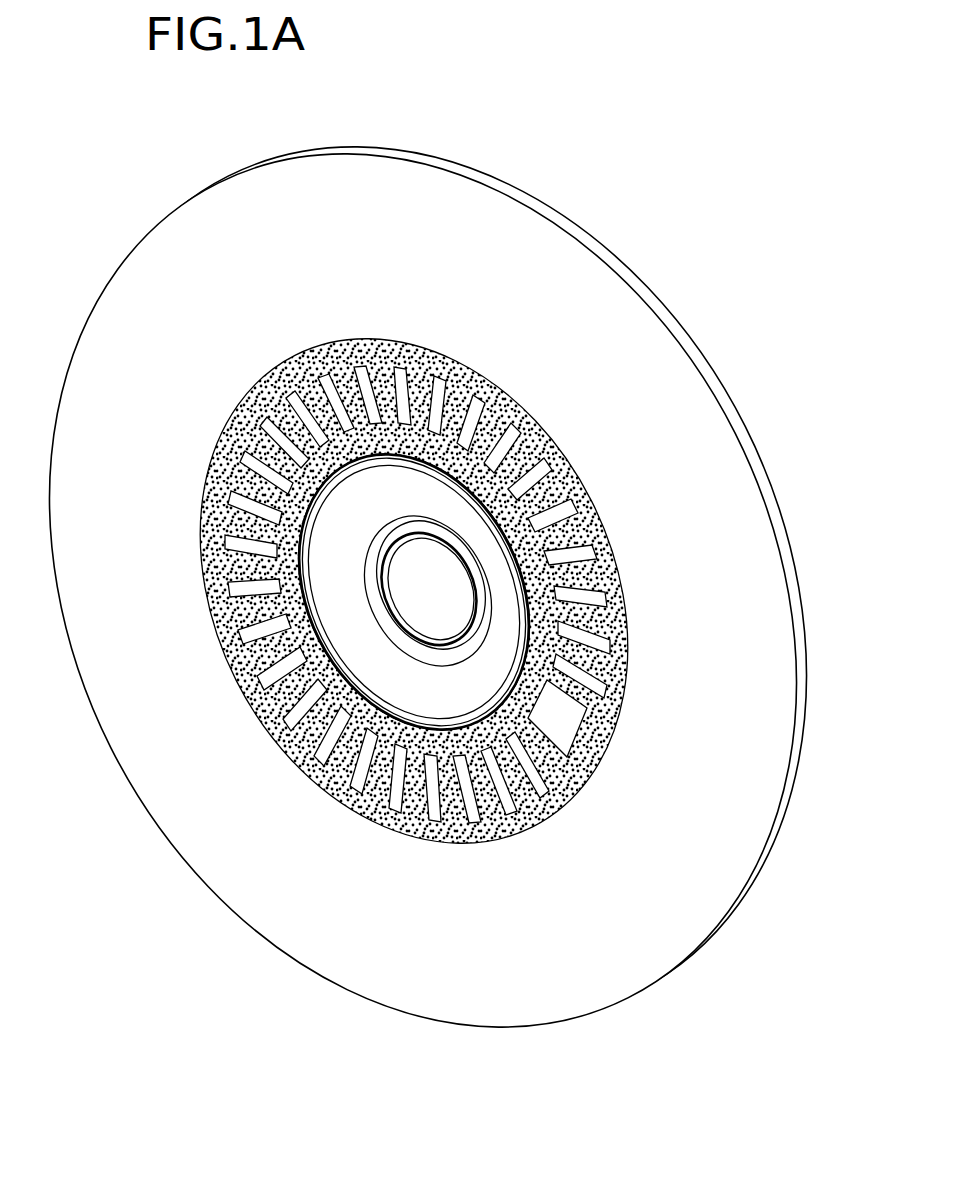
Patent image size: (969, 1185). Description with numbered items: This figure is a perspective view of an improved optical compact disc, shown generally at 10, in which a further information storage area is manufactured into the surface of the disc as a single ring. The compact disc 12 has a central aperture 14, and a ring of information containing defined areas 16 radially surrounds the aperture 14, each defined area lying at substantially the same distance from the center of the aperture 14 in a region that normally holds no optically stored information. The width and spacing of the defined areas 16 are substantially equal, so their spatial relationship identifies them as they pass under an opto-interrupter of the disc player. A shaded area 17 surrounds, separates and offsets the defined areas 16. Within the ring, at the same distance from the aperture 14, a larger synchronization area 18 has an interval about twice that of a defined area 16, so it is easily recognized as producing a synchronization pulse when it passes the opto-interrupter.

The embodiment of the invention 10 is at (475, 587).
The compact disc 12 is at (164, 753).
The aperture 14 is at (437, 582).
The information containing defined areas 16 is at (247, 460).
The shaded area 17 is at (340, 353).
The synchronization area 18 is at (560, 718).